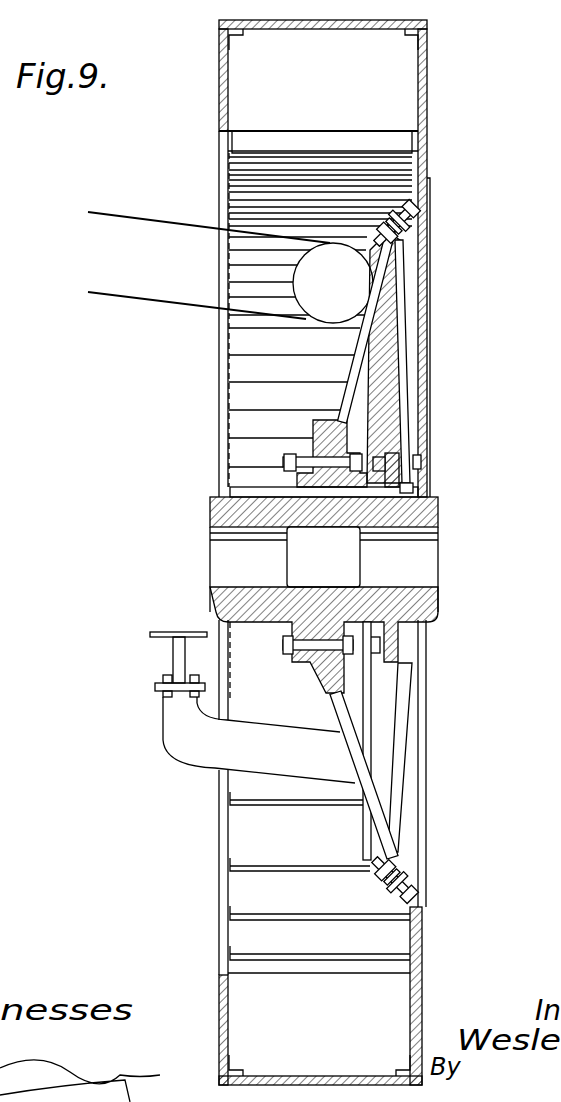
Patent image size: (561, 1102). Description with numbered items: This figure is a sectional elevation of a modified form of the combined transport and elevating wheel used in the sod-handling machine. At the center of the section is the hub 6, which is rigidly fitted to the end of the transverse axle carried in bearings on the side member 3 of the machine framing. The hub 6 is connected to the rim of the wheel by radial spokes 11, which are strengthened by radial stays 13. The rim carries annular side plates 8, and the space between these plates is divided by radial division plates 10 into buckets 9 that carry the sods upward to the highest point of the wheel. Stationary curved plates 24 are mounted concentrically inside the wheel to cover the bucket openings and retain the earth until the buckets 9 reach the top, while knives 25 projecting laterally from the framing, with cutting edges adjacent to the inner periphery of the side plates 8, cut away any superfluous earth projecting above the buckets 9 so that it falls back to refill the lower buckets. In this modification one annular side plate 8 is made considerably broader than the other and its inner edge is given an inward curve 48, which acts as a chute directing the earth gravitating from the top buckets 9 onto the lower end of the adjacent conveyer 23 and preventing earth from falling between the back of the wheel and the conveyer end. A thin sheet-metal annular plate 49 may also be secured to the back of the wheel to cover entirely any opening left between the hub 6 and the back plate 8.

The side member 3 is at (168, 647).
The hub 6 is at (324, 556).
The annular side plate 8 is at (219, 68).
The bucket 9 is at (240, 143).
The radial division plate 10 is at (250, 917).
The radial spoke 11 is at (422, 388).
The radial stay 13 is at (357, 374).
The conveyer band 23 is at (168, 224).
The stationary curved plate 24 is at (243, 430).
The knife 25 is at (259, 740).
The inwardly curved portion 48 is at (424, 187).
The annular plate 49 is at (430, 296).